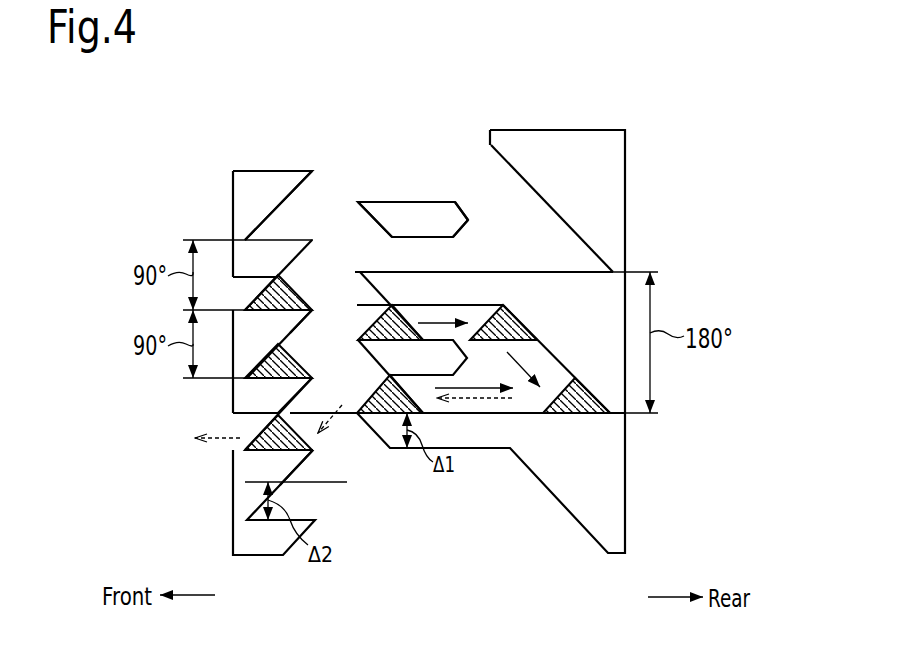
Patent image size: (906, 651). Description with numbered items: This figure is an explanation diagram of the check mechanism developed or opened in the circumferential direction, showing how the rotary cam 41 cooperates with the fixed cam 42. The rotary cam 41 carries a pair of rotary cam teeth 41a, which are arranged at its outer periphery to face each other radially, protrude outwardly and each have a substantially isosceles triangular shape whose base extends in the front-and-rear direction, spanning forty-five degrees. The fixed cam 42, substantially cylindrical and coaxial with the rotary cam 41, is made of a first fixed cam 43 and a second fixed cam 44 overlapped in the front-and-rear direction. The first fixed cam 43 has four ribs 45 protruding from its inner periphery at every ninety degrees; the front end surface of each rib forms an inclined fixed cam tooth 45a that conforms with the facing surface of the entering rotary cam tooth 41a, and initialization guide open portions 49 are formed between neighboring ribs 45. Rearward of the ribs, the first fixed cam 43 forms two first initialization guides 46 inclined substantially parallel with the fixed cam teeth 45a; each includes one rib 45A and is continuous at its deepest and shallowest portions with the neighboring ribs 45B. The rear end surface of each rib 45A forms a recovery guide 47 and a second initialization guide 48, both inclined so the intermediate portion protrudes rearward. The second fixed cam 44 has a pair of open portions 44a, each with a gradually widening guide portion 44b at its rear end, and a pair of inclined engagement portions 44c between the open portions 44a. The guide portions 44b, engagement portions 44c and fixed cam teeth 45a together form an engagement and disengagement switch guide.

The rotary cam 41 is at (396, 387).
The rotary cam teeth 41a is at (357, 388).
The fixed cam 42 is at (403, 97).
The first fixed cam 43 is at (395, 148).
The second fixed cam 44 is at (318, 148).
The open portions 44a is at (232, 289).
The guide portion 44b is at (303, 253).
The engagement portions 44c is at (304, 316).
The ribs 45 is at (473, 345).
The rib 45A is at (403, 212).
The ribs 45B is at (395, 275).
The fixed cam tooth 45a is at (373, 320).
The first initialization guides 46 is at (551, 213).
The recovery guide 47 is at (459, 204).
The second initialization guide 48 is at (464, 229).
The initialization guide open portions 49 is at (427, 320).